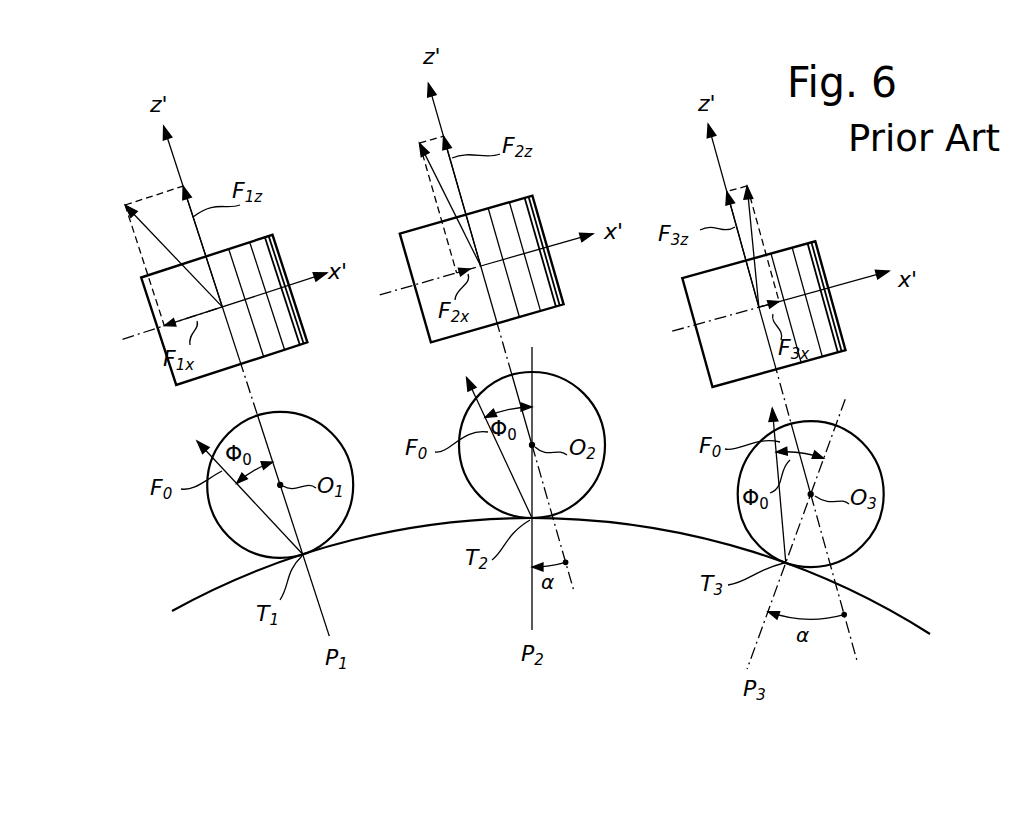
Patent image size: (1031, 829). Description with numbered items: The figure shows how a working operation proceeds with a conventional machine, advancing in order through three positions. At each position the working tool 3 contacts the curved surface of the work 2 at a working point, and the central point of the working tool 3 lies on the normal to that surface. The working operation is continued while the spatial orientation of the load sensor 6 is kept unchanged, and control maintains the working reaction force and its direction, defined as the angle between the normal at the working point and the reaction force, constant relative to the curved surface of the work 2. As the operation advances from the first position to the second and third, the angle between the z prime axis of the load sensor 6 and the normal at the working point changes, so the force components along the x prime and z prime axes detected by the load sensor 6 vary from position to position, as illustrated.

The work 2 is at (880, 623).
The working tool 3 is at (307, 433).
The load sensor 6 is at (262, 258).